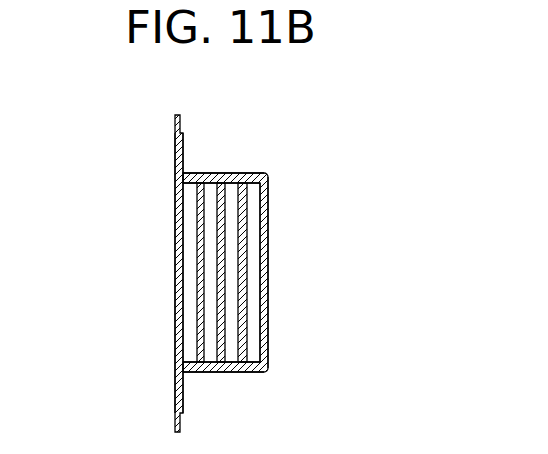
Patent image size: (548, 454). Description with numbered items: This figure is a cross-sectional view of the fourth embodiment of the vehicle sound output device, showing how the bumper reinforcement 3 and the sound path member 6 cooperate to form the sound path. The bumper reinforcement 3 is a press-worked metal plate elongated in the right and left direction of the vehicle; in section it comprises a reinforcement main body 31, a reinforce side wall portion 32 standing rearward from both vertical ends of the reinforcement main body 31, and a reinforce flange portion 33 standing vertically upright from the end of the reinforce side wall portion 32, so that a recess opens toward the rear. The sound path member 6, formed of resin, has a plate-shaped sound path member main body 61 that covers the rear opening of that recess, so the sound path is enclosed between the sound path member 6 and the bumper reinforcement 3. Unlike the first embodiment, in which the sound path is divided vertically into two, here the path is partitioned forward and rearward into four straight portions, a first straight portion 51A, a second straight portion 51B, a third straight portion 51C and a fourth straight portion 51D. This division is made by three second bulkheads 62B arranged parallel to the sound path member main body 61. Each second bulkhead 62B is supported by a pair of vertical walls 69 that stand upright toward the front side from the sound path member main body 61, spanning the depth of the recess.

The bumper reinforcement 3 is at (267, 178).
The sound path member 6 is at (175, 380).
The reinforcement main body 31 is at (265, 277).
The reinforce side wall portion 32 is at (248, 174).
The reinforce flange portion 33 is at (184, 141).
The first straight portion 51A is at (251, 327).
The second straight portion 51B is at (227, 353).
The third straight portion 51C is at (211, 195).
The fourth straight portion 51D is at (186, 205).
The sound path member main body 61 is at (177, 252).
The second bulkhead 62B is at (203, 245).
The vertical wall 69 is at (224, 177).